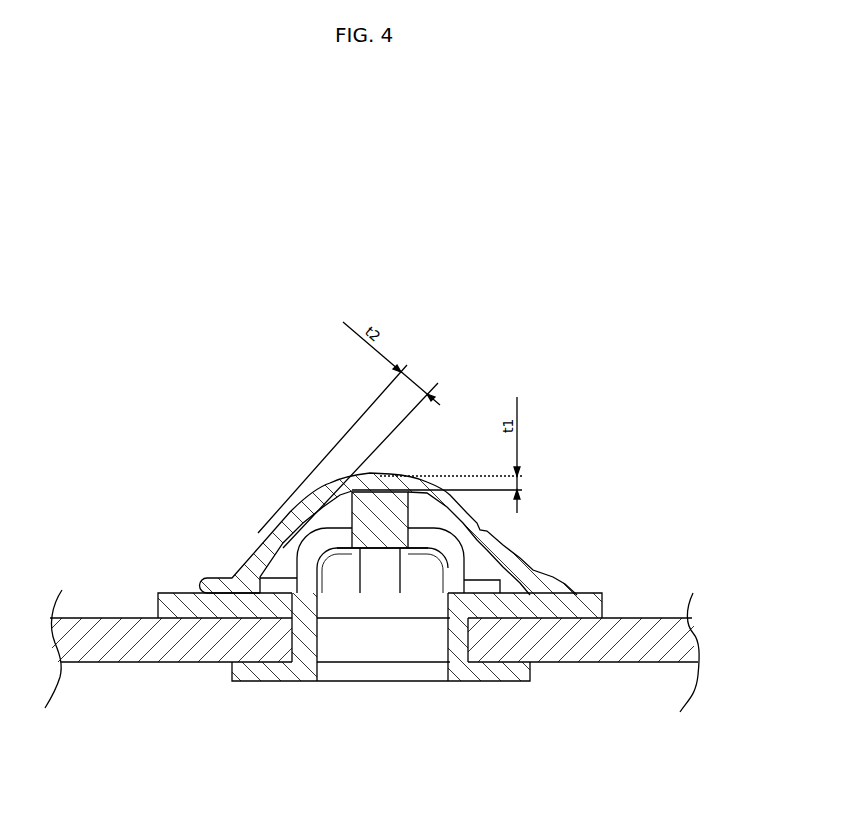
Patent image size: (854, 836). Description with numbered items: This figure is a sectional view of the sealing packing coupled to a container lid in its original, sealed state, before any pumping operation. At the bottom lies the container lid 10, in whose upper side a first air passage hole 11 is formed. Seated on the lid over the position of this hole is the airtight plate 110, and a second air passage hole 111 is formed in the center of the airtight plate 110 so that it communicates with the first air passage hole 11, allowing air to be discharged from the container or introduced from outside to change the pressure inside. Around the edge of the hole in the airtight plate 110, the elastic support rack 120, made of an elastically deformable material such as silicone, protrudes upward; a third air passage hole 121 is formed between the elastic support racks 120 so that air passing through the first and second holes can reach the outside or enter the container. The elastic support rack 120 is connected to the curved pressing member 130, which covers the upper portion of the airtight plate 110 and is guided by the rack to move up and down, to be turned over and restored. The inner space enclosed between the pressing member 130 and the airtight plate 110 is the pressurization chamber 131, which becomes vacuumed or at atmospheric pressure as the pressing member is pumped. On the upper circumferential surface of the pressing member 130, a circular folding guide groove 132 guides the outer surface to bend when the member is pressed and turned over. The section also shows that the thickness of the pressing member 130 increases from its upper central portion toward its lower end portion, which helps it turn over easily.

The container lid 10 is at (593, 647).
The first air passage hole 11 is at (380, 640).
The airtight plate 110 is at (182, 598).
The second air passage hole 111 is at (380, 605).
The elastic support rack 120 is at (587, 595).
The third air passage hole 121 is at (343, 563).
The pressing member 130 is at (420, 497).
The pressurization chamber 131 is at (470, 557).
The folding guide groove 132 is at (480, 526).